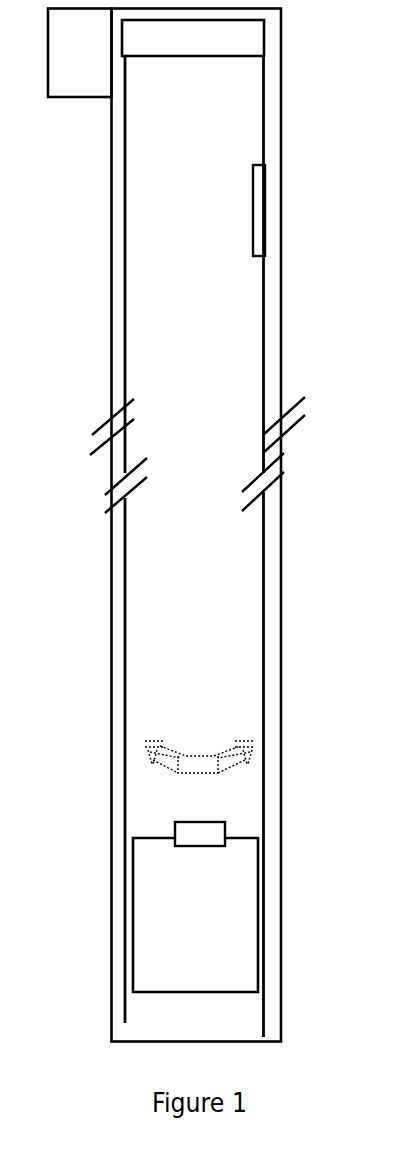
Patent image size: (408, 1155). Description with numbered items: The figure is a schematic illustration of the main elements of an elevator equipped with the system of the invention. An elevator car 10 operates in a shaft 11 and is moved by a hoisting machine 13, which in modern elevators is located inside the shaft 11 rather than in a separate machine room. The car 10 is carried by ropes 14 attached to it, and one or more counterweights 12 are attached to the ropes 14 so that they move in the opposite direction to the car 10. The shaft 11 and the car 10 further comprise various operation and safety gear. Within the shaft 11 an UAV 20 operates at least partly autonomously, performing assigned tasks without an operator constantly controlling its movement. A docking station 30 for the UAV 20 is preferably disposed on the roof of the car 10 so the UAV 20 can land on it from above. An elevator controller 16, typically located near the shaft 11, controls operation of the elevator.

The elevator car 10 is at (228, 857).
The shaft 11 is at (271, 587).
The counterweight 12 is at (258, 195).
The hoisting machine 13 is at (176, 54).
The ropes 14 is at (128, 303).
The elevator controller 16 is at (79, 77).
The UAV 20 is at (178, 752).
The docking station 30 is at (190, 835).